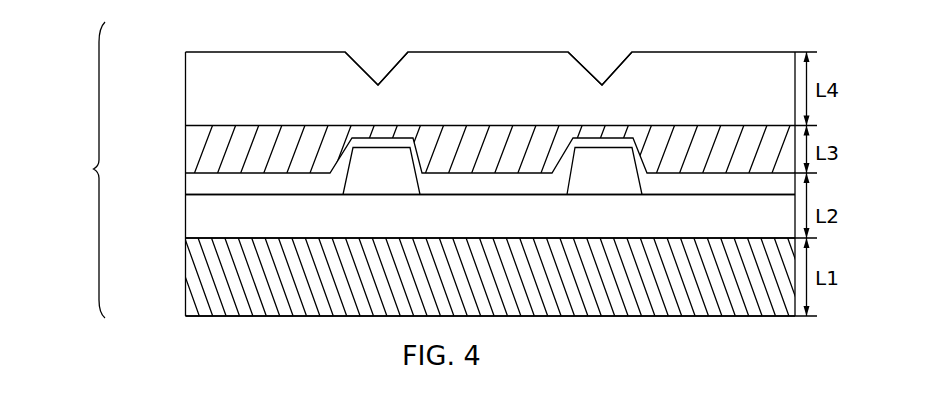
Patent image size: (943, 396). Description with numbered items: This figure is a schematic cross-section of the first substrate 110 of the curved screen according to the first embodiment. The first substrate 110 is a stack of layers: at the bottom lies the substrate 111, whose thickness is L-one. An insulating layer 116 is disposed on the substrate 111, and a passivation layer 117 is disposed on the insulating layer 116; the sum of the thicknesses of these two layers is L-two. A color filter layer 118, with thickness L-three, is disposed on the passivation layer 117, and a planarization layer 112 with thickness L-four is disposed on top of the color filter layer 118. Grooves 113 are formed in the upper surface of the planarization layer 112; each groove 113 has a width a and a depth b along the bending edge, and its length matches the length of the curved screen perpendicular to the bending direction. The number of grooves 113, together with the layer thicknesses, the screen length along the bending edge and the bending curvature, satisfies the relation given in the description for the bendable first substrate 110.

The first substrate 110 is at (418, 170).
The substrate 111 is at (200, 281).
The planarization layer 112 is at (203, 90).
The groove 113 is at (370, 55).
The insulating layer 116 is at (198, 222).
The passivation layer 117 is at (198, 188).
The color filter layer 118 is at (200, 152).